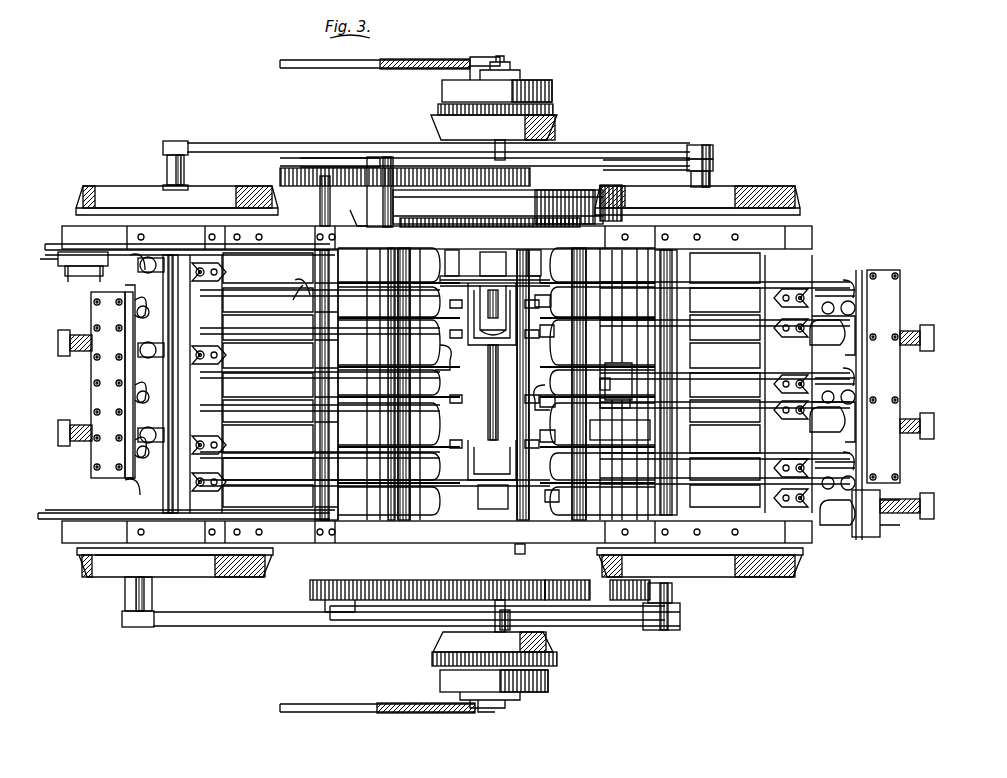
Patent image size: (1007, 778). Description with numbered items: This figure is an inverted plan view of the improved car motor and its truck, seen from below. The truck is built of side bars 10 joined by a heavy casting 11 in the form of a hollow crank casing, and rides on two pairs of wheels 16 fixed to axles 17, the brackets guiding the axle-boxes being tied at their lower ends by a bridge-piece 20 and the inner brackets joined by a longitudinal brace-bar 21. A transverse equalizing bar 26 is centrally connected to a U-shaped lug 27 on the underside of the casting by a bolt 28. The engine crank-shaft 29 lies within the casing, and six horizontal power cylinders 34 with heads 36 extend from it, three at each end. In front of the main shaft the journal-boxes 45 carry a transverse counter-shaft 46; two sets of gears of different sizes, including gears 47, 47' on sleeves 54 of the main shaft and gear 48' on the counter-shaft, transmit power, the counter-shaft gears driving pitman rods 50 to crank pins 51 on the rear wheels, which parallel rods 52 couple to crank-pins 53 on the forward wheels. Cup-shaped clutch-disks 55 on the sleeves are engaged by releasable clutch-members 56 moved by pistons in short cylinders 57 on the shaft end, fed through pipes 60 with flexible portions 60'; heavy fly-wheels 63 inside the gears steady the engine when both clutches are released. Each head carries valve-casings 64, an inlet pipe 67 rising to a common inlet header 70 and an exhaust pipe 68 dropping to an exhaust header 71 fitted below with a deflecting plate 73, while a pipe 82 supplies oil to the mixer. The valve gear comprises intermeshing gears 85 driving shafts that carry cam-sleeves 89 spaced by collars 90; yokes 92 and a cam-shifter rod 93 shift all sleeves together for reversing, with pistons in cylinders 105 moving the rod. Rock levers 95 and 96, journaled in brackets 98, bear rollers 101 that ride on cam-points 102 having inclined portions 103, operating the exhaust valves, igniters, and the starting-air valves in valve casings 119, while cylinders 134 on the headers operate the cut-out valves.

The side bars 10 is at (297, 230).
The casting 11 is at (430, 468).
The wheels 16 is at (205, 188).
The axles 17 is at (684, 420).
The bridge-piece 20 is at (200, 215).
The brace-bar 21 is at (458, 226).
The equalizing bar 26 is at (620, 440).
The U-shaped lug 27 is at (628, 372).
The bolt 28 is at (608, 395).
The crank-shaft 29 is at (507, 552).
The power cylinders 34 is at (491, 380).
The heads 36 is at (215, 265).
The journal-boxes 45 is at (355, 206).
The counter-shaft 46 is at (380, 210).
The gear 47 is at (418, 180).
The gear 47' is at (605, 591).
The gear 48' is at (430, 596).
The pitman rods 50 is at (635, 170).
The crank pins 51 is at (712, 182).
The parallel rods 52 is at (296, 150).
The crank-pins 53 is at (185, 178).
The sleeves 54 is at (505, 152).
The clutch-disks 55 is at (555, 135).
The clutch-members 56 is at (553, 110).
The cylinders 57 is at (552, 95).
The pipes 60 is at (377, 394).
The flexible portions 60' is at (426, 396).
The fly-wheels 63 is at (580, 196).
The valve-casings 64 is at (225, 282).
The inlet pipe 67 is at (150, 262).
The exhaust pipe 68 is at (128, 475).
The inlet header 70 is at (120, 250).
The exhaust header 71 is at (90, 395).
The deflecting plate 73 is at (102, 450).
The pipe 82 is at (460, 250).
The gears 85 is at (525, 220).
The cam-sleeves 89 is at (450, 302).
The collars 90 is at (548, 353).
The yokes 92 is at (478, 340).
The cam-shifter rod 93 is at (490, 395).
The shifter 95 is at (283, 300).
The shifter 96 is at (305, 282).
The brackets 98 is at (312, 168).
The rollers 101 is at (445, 360).
The cam-points 102 is at (430, 418).
The inclined portions 103 is at (555, 290).
The cylinders 105 is at (496, 380).
The valve casing 119 is at (130, 310).
The cylinders 134 is at (70, 337).